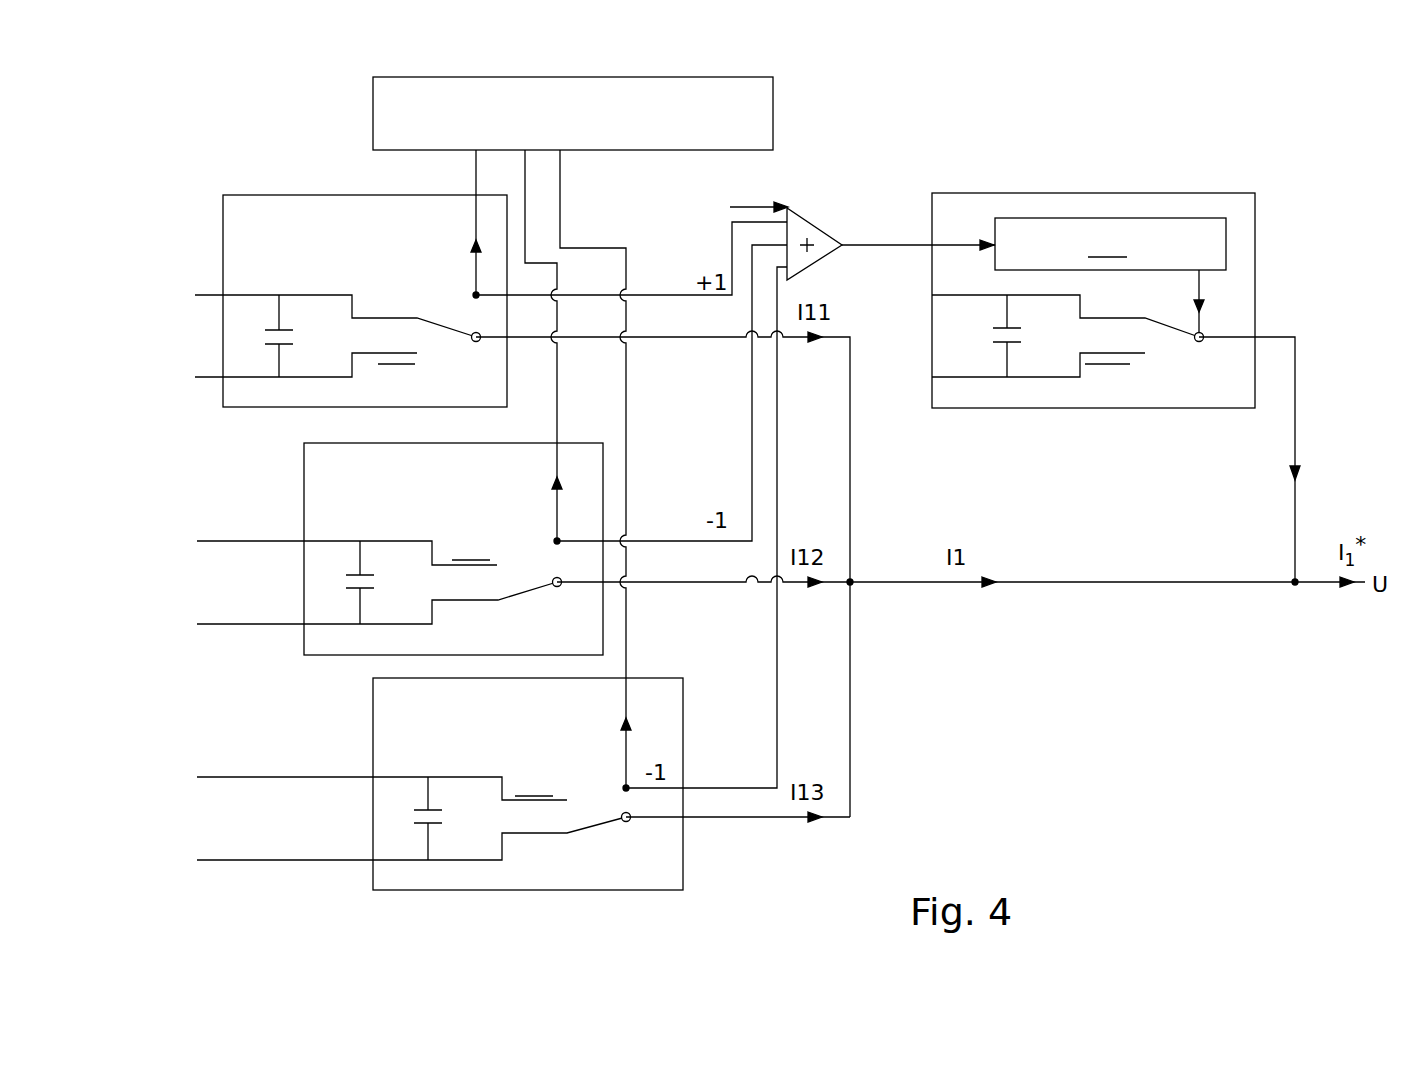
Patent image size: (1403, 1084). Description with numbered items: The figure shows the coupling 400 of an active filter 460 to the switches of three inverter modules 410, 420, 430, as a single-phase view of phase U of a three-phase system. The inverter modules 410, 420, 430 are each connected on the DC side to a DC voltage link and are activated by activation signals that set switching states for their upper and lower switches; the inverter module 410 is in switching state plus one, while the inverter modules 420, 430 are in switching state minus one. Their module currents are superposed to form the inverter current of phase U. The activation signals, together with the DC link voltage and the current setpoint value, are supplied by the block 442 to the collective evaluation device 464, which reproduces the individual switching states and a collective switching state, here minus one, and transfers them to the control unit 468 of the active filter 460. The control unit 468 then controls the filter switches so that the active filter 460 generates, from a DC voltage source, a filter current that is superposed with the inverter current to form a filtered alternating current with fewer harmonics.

The coupling 400 is at (1246, 152).
The inverter module 410 is at (256, 408).
The inverter module 420 is at (331, 656).
The inverter module 430 is at (684, 848).
The microcontroller 442 is at (773, 103).
The active filter 460 is at (1129, 387).
The collective evaluation device 464 is at (803, 222).
The control unit 468 is at (1110, 244).